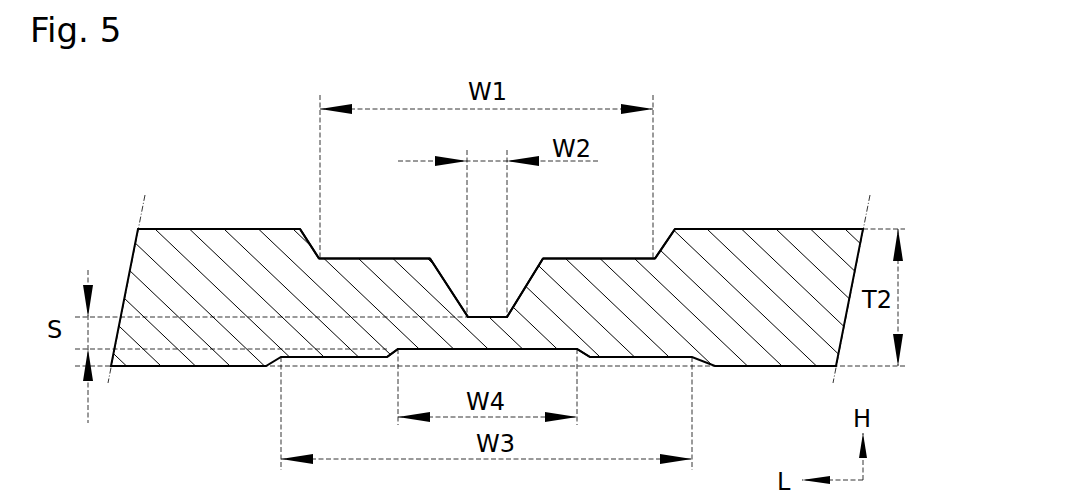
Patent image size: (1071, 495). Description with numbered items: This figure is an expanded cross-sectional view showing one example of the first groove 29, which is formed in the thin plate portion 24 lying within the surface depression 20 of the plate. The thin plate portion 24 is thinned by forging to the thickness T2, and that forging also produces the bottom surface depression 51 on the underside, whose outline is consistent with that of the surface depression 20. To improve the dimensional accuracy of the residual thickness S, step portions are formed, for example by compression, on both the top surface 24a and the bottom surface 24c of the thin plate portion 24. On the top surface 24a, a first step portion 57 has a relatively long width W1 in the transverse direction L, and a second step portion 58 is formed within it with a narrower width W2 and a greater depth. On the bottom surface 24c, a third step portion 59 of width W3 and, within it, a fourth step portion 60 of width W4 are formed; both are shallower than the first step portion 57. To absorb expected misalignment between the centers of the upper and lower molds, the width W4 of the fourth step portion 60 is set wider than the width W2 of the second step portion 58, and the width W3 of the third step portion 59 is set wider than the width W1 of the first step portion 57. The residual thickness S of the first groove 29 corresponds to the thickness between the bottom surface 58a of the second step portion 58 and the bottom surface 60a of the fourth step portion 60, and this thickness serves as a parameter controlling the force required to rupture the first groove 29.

The surface depression 20 is at (772, 205).
The thin plate portion 24 is at (250, 228).
The top surface 24a is at (210, 228).
The bottom surface 24c is at (148, 367).
The first groove 29 is at (663, 220).
The bottom surface depression 51 is at (193, 368).
The first step portion 57 is at (588, 258).
The second step portion 58 is at (518, 275).
The bottom surface of the second step portion 58a is at (485, 312).
The third step portion 59 is at (315, 357).
The fourth step portion 60 is at (538, 354).
The bottom surface of the fourth step portion 60a is at (428, 350).